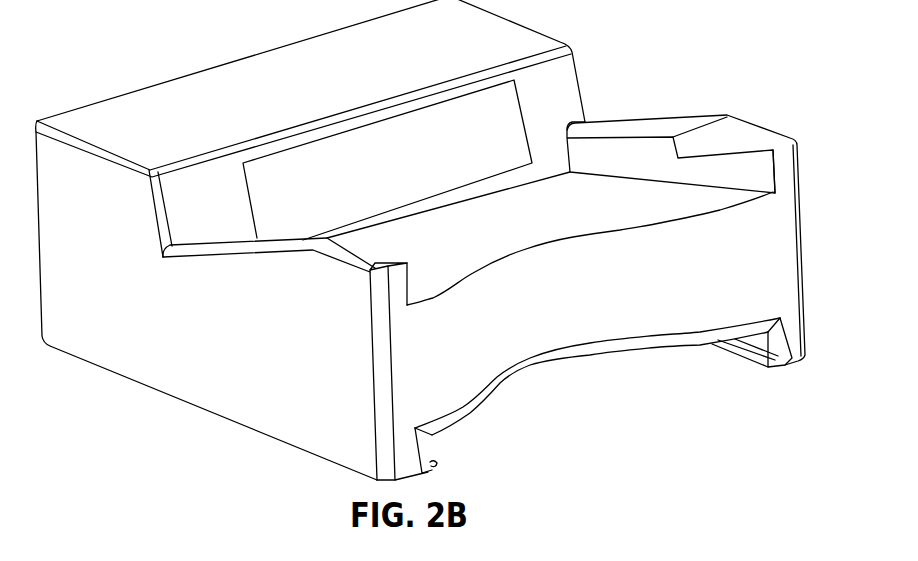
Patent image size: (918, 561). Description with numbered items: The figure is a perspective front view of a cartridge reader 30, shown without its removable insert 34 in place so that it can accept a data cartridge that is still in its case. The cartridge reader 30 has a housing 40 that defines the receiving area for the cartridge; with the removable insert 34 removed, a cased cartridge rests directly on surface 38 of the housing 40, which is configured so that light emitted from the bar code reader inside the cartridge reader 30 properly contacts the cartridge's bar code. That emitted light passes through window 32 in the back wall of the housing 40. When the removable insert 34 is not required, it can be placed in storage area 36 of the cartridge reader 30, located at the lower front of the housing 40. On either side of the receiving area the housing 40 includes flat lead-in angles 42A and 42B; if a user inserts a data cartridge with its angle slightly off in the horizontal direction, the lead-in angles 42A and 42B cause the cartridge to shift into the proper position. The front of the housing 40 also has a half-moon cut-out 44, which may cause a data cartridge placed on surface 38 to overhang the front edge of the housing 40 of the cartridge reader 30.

The cartridge reader 30 is at (667, 78).
The window 32 is at (460, 165).
The removable insert 34 is at (678, 338).
The storage area 36 is at (597, 368).
The surface 38 is at (495, 250).
The housing 40 is at (645, 296).
The lead-in angle 42A is at (382, 263).
The lead-in angle 42B is at (727, 142).
The half-moon cut-out 44 is at (688, 270).